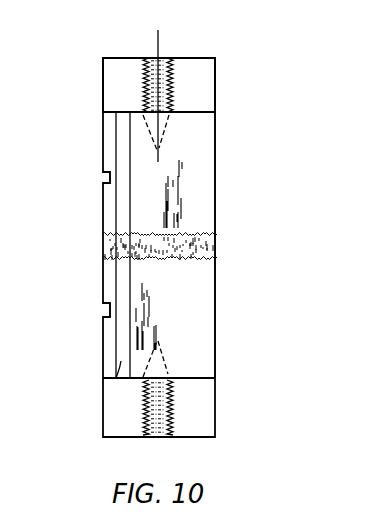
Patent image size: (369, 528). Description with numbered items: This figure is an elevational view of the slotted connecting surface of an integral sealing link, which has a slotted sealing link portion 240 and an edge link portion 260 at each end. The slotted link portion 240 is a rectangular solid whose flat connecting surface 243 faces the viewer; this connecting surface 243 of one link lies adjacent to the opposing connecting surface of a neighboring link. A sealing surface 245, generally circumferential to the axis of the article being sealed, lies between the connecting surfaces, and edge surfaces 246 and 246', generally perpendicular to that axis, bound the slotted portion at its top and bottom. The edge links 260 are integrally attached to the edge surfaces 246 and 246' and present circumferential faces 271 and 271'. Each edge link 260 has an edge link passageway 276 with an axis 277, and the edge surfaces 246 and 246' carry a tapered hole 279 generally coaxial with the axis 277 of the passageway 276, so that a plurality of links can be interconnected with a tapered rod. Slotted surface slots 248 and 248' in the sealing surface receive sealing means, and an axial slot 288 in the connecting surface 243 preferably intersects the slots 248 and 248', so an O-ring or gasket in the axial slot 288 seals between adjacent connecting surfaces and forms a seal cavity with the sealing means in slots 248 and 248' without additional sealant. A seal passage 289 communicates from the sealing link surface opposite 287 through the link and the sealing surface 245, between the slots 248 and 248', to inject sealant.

The slotted sealing link portion 240 is at (224, 330).
The connecting surface 243 is at (197, 197).
The sealing surface 245 is at (103, 216).
The edge surface 246 is at (209, 111).
The edge surface 246' is at (199, 387).
The slotted surface slot 248 is at (77, 169).
The slotted surface slot 248' is at (78, 321).
The edge link portion 260 is at (226, 88).
The circumferential face 271 is at (74, 85).
The circumferential face 271' is at (252, 62).
The edge link passageway 276 is at (165, 58).
The axis 277 is at (156, 38).
The tapered hole 279 is at (163, 125).
The sealing link surface opposite 287 is at (216, 284).
The axial slot 288 is at (104, 379).
The seal passage 289 is at (215, 245).